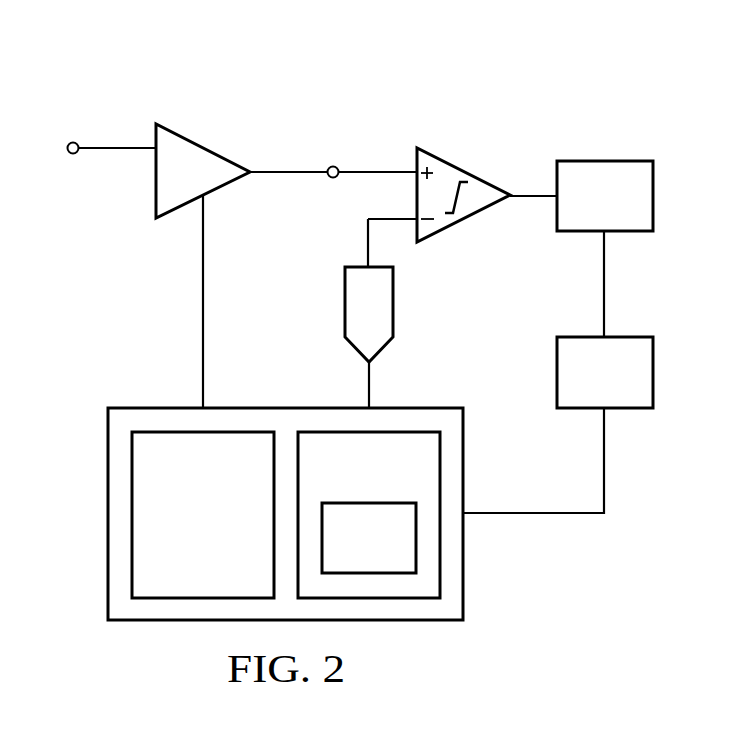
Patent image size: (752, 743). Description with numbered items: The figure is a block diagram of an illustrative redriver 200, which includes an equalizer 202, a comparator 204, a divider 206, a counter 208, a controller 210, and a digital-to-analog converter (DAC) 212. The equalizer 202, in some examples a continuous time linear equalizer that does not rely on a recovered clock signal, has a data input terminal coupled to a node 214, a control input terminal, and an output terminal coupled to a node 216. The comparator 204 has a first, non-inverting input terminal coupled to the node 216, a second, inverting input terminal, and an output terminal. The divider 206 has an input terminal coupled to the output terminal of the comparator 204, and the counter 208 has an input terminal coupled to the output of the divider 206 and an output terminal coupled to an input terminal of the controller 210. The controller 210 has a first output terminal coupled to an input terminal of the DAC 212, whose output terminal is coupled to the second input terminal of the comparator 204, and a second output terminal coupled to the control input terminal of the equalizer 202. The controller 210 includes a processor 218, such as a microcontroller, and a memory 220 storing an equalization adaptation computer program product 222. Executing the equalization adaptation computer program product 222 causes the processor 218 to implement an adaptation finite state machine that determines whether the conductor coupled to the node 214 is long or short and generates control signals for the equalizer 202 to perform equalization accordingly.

The redriver 200 is at (440, 100).
The equalizer 202 is at (193, 140).
The comparator 204 is at (465, 172).
The divider 206 is at (626, 211).
The counter 208 is at (626, 388).
The controller 210 is at (240, 514).
The digital-to-analog converter 212 is at (394, 302).
The node 214 is at (73, 142).
The node 216 is at (333, 166).
The processor 218 is at (225, 521).
The memory 220 is at (390, 480).
The equalization adaptation computer program product 222 is at (390, 551).